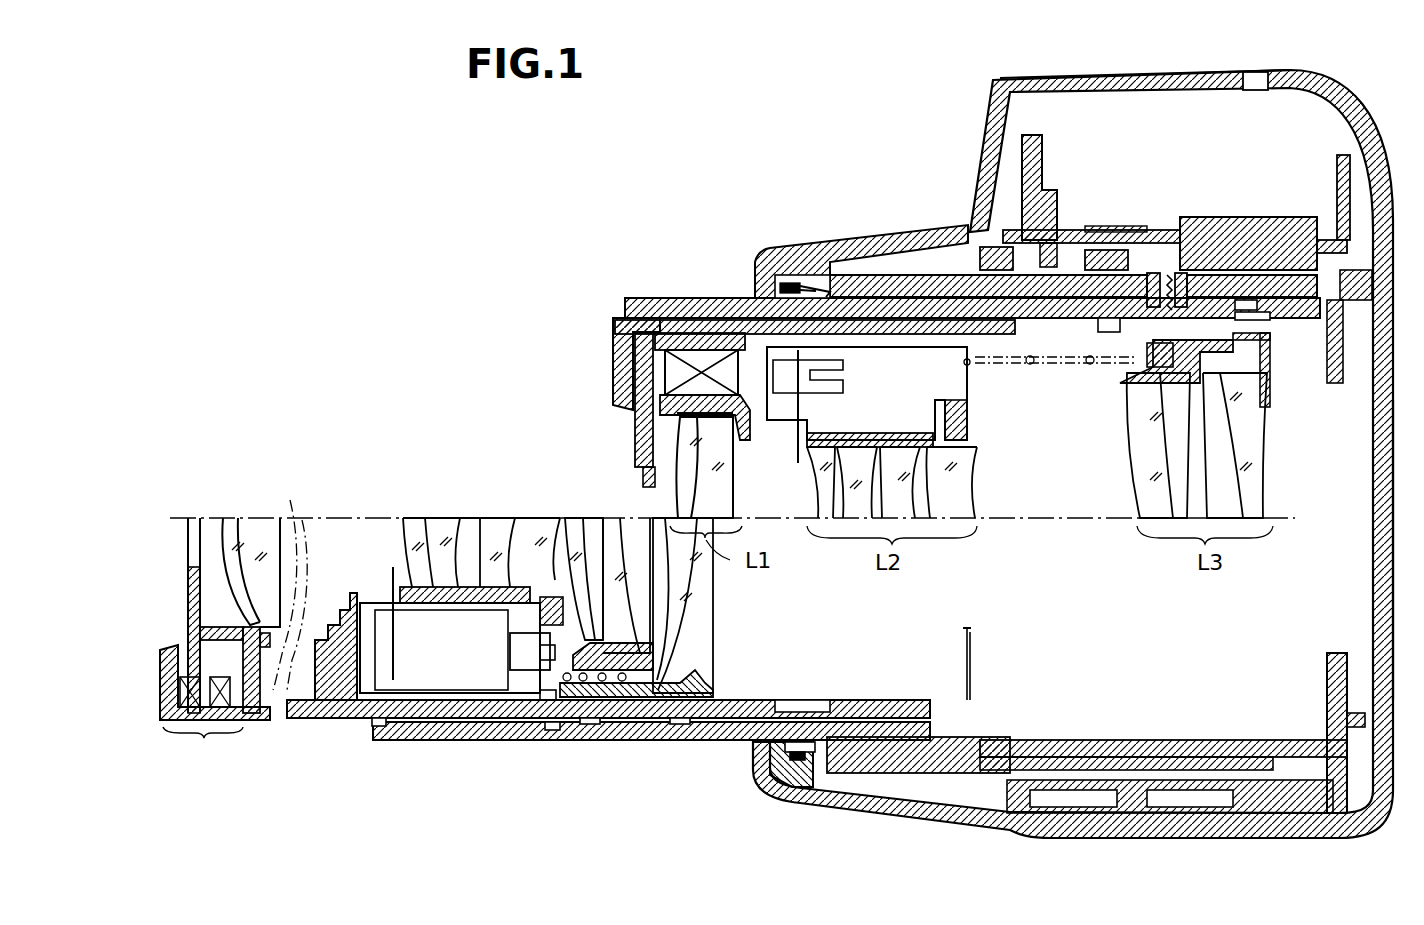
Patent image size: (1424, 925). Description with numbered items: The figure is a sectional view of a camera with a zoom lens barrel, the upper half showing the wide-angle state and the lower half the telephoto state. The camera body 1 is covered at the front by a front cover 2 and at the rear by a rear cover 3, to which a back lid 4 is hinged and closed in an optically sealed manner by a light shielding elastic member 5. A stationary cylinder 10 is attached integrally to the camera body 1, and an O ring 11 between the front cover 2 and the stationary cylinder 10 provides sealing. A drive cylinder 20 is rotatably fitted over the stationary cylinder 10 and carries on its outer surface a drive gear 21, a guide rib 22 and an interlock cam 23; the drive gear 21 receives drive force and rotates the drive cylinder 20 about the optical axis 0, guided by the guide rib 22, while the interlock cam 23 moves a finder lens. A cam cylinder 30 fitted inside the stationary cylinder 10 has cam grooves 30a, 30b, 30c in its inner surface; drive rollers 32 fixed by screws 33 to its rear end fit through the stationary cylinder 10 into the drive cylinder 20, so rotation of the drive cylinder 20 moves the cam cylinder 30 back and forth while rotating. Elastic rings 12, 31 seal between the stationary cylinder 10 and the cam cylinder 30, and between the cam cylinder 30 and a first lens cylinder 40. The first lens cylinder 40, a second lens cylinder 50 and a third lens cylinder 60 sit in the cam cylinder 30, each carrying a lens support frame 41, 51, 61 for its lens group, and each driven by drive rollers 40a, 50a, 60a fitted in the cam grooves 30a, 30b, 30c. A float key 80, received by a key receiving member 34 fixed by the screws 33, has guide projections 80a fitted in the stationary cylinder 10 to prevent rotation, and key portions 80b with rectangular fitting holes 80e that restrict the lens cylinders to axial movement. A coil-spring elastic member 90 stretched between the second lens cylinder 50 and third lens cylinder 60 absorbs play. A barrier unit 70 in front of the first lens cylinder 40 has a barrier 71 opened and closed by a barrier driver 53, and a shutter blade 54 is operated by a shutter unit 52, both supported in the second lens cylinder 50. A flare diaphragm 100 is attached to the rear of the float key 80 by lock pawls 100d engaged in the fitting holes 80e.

The optical axis 0 is at (288, 500).
The camera body 1 is at (1298, 236).
The front cover 2 is at (1040, 80).
The rear cover 3 is at (1272, 85).
The back lid 4 is at (1395, 585).
The light shielding elastic member 5 is at (1393, 794).
The stationary cylinder 10 is at (782, 283).
The O ring 11 is at (797, 288).
The elastic ring 12 is at (822, 762).
The drive cylinder 20 is at (867, 270).
The drive gear 21 is at (995, 247).
The guide rib 22 is at (1057, 243).
The interlock cam 23 is at (1093, 226).
The cam cylinder 30 is at (718, 298).
The cam groove 30a is at (460, 718).
The cam groove 30b is at (590, 724).
The cam groove 30c is at (680, 724).
The elastic ring 31 is at (387, 726).
The drive roller 32 is at (1155, 273).
The screw 33 is at (1170, 275).
The key receiving member 34 is at (1295, 217).
The first lens cylinder 40 is at (652, 316).
The drive roller 40a is at (350, 718).
The lens support frame 41 is at (672, 412).
The second lens cylinder 50 is at (988, 360).
The drive roller 50a is at (553, 730).
The lens support frame 51 is at (870, 433).
The shutter unit 52 is at (442, 610).
The barrier driver 53 is at (786, 407).
The shutter blade 54 is at (393, 567).
The third lens cylinder 60 is at (1160, 352).
The drive roller 60a is at (640, 700).
The lens support frame 61 is at (1140, 425).
The barrier unit 70 is at (215, 713).
The barrier 71 is at (648, 488).
The float key 80 is at (1245, 320).
The guide projection 80a is at (1243, 300).
The key portion 80b is at (867, 393).
The fitting hole 80e is at (1108, 323).
The elastic member 90 is at (1034, 364).
The flare diaphragm 100 is at (1275, 368).
The lock pawl 100d is at (795, 705).